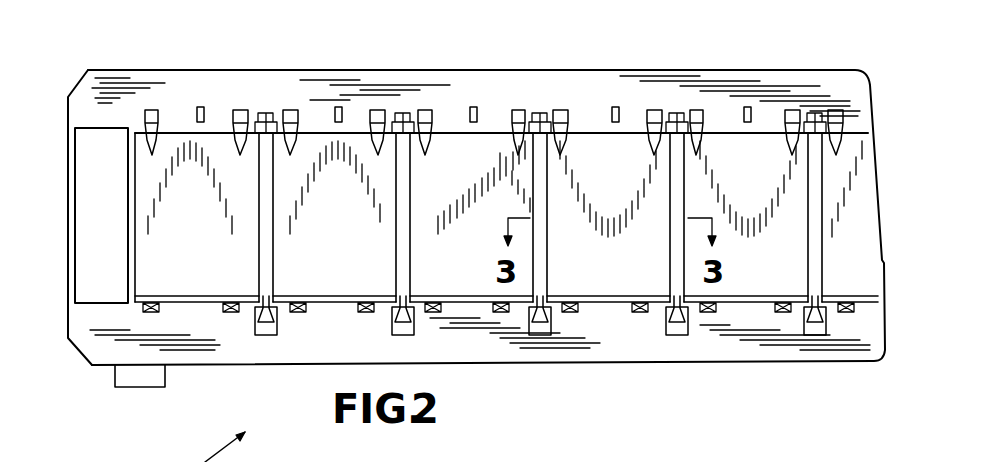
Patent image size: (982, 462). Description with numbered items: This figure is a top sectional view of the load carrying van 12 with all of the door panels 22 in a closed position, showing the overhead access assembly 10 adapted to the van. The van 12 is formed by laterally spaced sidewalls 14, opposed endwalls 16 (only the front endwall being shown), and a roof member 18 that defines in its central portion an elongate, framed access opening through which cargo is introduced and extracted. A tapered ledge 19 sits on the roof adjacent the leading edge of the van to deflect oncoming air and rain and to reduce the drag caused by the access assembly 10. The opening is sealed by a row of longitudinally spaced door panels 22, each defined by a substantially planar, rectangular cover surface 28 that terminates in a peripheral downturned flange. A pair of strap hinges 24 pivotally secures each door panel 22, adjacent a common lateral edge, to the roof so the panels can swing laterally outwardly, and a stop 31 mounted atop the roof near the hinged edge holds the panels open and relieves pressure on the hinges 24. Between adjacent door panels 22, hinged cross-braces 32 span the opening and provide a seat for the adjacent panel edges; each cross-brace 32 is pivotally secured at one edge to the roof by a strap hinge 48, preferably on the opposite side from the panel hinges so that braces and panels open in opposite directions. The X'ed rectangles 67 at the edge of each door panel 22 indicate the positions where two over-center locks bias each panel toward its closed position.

The overhead access assembly 10 is at (880, 147).
The load carrying van 12 is at (30, 6).
The sidewalls 14 is at (470, 70).
The endwalls 16 is at (64, 230).
The roof member 18 is at (178, 117).
The tapered ledge 19 is at (107, 197).
The door panels 22 is at (210, 217).
The strap hinges 24 is at (380, 112).
The cover surface 28 is at (452, 188).
The stop 31 is at (213, 115).
The hinged cross-braces 32 is at (257, 315).
The strap hinge 48 is at (413, 320).
The X'ed rectangles 67 is at (358, 309).